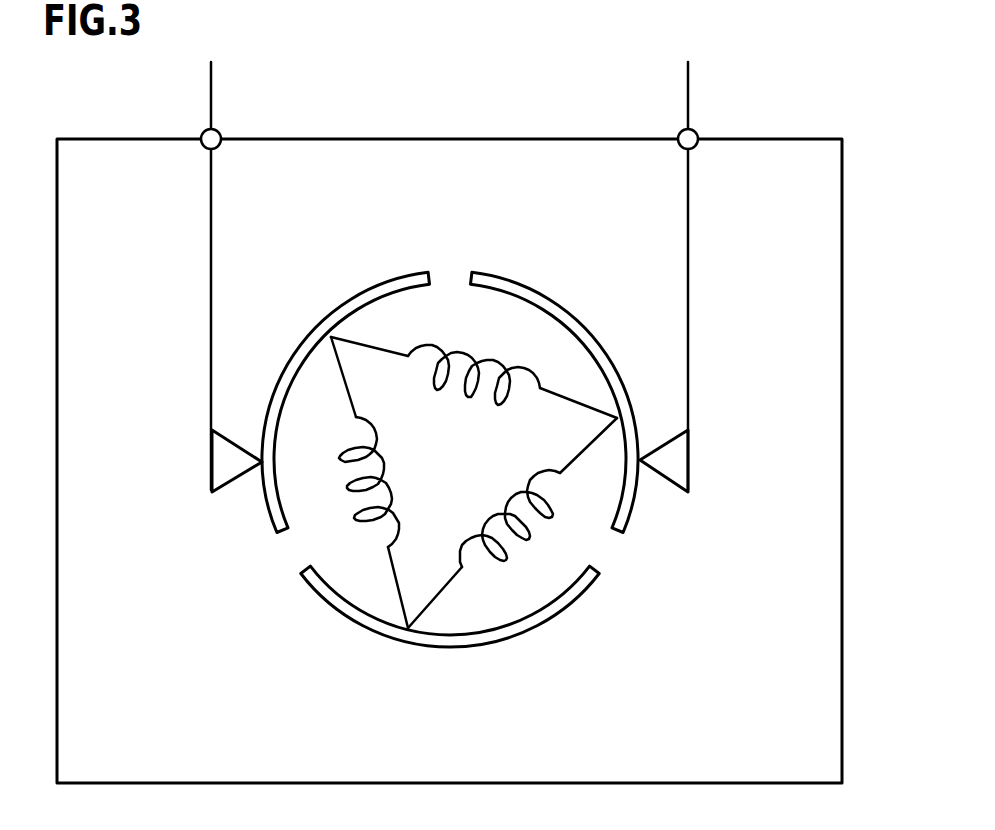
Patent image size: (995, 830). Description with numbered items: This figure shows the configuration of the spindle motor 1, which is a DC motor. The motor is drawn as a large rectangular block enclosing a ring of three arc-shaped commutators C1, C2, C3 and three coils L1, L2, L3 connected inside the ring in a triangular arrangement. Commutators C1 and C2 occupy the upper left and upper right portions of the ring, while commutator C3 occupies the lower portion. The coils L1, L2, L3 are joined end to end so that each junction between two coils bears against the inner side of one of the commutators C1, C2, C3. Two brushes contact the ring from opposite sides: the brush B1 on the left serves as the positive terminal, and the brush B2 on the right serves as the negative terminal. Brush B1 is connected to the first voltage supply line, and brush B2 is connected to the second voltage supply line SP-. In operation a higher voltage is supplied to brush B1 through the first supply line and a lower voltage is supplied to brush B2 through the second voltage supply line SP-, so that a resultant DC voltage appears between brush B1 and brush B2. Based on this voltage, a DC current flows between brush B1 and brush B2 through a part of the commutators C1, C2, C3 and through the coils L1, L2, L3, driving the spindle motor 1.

The spindle motor 1 is at (792, 138).
The second voltage supply line SP- is at (688, 92).
The brush B1 is at (212, 478).
The brush B2 is at (688, 478).
The commutator C1 is at (332, 313).
The commutator C2 is at (569, 313).
The commutator C3 is at (450, 652).
The coil L1 is at (486, 394).
The coil L2 is at (392, 462).
The coil L3 is at (480, 510).